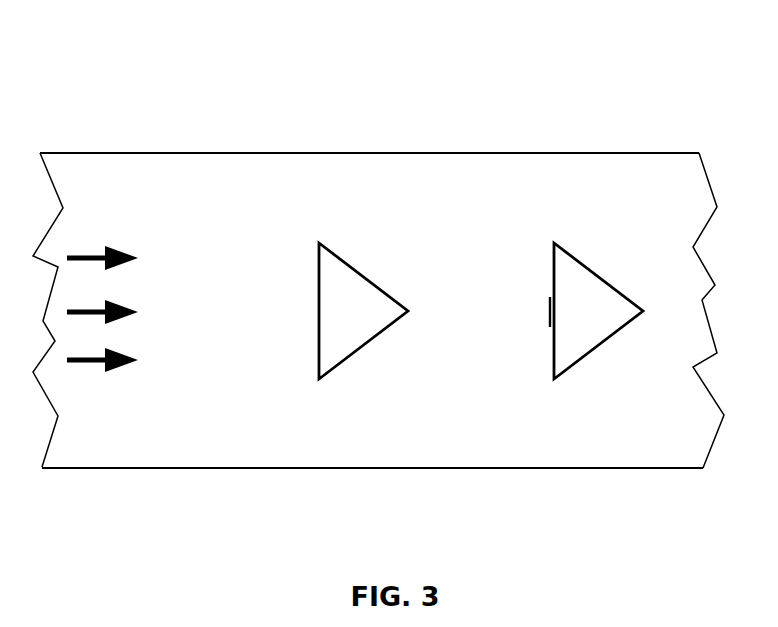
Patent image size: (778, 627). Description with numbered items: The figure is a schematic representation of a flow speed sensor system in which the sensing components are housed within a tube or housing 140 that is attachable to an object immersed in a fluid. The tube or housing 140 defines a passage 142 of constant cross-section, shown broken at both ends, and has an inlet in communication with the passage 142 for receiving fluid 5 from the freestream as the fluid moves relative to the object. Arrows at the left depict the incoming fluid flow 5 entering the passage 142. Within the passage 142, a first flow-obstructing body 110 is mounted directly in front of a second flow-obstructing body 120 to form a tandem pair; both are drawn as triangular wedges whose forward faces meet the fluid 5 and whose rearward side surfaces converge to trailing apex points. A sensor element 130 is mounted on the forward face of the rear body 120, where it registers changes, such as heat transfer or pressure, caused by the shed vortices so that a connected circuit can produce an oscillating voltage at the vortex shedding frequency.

The fluid flow 5 is at (80, 255).
The first flow-obstructing body 110 is at (378, 282).
The second flow-obstructing body 120 is at (612, 283).
The sensor element 130 is at (548, 305).
The tube or housing 140 is at (233, 153).
The passage 142 is at (218, 405).